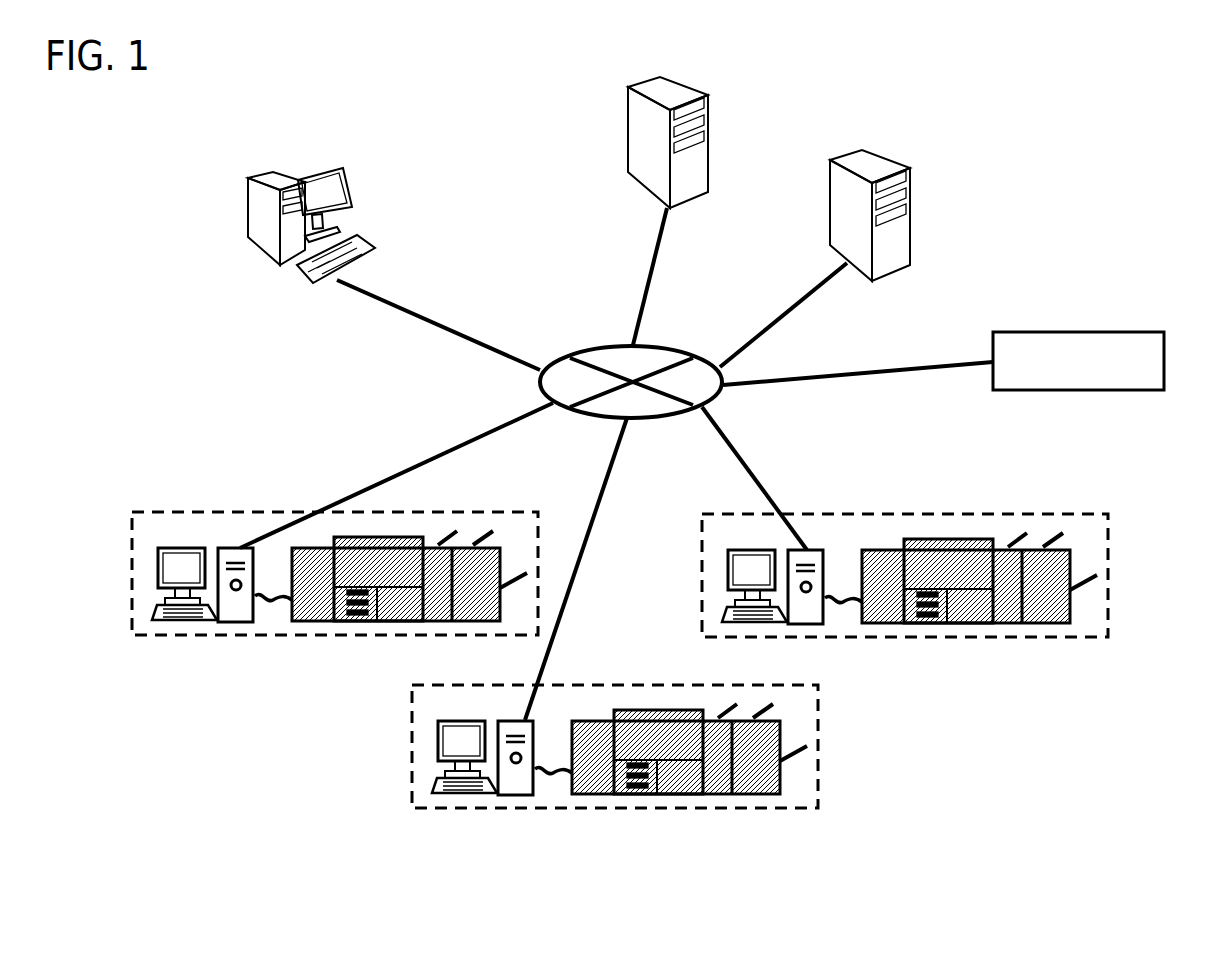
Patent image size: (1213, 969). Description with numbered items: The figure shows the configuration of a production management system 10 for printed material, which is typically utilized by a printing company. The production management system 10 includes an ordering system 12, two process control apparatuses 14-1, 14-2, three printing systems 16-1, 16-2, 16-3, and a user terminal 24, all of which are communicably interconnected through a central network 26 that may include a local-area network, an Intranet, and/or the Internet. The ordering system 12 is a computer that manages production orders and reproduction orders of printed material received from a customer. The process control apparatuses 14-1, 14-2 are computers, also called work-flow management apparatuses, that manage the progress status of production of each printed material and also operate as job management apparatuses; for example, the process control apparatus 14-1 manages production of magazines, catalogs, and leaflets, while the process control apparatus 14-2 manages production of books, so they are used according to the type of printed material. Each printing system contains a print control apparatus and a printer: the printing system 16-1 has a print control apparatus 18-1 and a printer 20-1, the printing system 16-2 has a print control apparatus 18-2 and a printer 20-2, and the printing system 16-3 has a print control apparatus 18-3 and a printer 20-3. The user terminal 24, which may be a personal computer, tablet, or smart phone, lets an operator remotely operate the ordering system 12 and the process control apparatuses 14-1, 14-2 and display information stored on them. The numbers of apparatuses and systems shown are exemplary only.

The production management system 10 is at (1127, 98).
The ordering system 12 is at (267, 260).
The process control apparatus 14-1 is at (708, 120).
The process control apparatus 14-2 is at (882, 157).
The printing system 16-1 is at (183, 507).
The printing system 16-2 is at (618, 680).
The printing system 16-3 is at (948, 510).
The print control apparatus 18-1 is at (232, 621).
The print control apparatus 18-2 is at (482, 792).
The print control apparatus 18-3 is at (805, 616).
The printer 20-1 is at (327, 621).
The printer 20-2 is at (689, 783).
The printer 20-3 is at (979, 613).
The user terminal 24 is at (1115, 332).
The network 26 is at (588, 348).